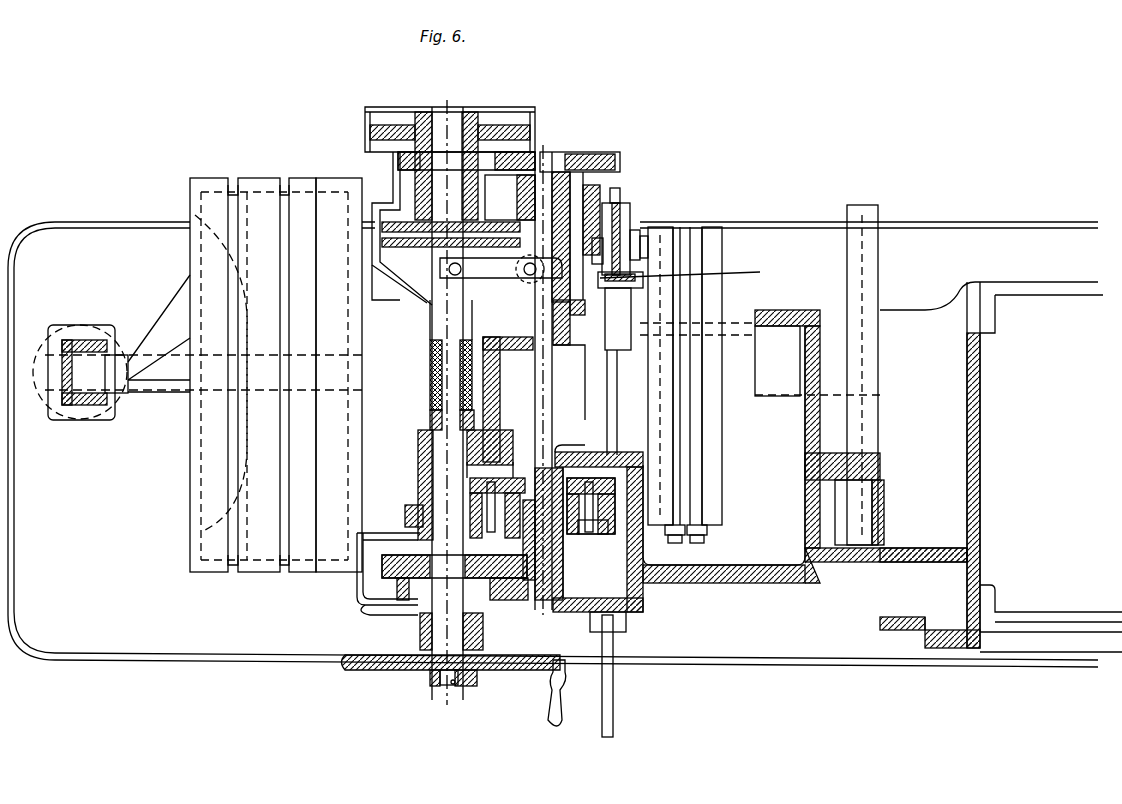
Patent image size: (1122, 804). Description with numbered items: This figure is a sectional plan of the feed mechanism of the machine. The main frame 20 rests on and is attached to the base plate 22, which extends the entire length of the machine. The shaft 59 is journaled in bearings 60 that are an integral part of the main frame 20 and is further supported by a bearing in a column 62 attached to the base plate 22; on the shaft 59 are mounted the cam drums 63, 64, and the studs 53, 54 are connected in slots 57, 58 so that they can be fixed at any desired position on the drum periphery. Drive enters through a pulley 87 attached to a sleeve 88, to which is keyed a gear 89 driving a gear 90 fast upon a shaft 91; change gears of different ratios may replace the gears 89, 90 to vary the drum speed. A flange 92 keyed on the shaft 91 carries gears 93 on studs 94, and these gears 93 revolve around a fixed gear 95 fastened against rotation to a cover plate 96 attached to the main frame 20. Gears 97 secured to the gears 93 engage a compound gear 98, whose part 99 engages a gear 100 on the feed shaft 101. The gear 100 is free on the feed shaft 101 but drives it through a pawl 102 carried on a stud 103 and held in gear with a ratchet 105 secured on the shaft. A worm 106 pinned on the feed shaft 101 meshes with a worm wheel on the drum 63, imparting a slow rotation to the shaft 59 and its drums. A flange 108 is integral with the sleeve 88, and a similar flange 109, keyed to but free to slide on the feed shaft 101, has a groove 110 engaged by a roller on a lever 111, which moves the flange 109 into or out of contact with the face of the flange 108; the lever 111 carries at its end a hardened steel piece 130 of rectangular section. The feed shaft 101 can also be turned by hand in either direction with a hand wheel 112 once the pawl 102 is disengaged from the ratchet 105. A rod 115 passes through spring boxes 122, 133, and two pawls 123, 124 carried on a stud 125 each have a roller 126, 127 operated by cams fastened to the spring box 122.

The main frame 20 is at (752, 578).
The base plate 22 is at (553, 444).
The stud 53 is at (673, 537).
The stud 54 is at (700, 538).
The slot 57 is at (678, 420).
The slot 58 is at (698, 440).
The shaft 59 is at (175, 385).
The bearing 60 is at (428, 345).
The column 62 is at (88, 340).
The drum 63 is at (276, 375).
The drum 64 is at (878, 275).
The pulley 87 is at (530, 160).
The sleeve 88 is at (480, 125).
The gear 89 is at (500, 155).
The gear 90 is at (600, 165).
The shaft 91 is at (560, 158).
The flange 92 is at (568, 450).
The gear 93 is at (440, 512).
The stud 94 is at (470, 497).
The fixed gear 95 is at (575, 540).
The cover plate 96 is at (626, 620).
The gear 97 is at (615, 475).
The compound gear 98 is at (527, 450).
The part of compound gear 99 is at (580, 545).
The gear 100 is at (495, 568).
The feed shaft 101 is at (445, 683).
The pawl 102 is at (357, 570).
The stud 103 is at (360, 598).
The ratchet 105 is at (418, 545).
The worm 106 is at (430, 378).
The flange 108 is at (495, 235).
The flange 109 is at (420, 245).
The groove 110 is at (420, 270).
The lever 111 is at (501, 269).
The hand wheel 112 is at (548, 672).
The rod 115 is at (620, 190).
The spring box 122 is at (625, 208).
The pawl 123 is at (632, 232).
The pawl 124 is at (605, 285).
The stud 125 is at (585, 215).
The roller 126 is at (643, 240).
The roller 127 is at (592, 245).
The hardened steel piece 130 is at (688, 268).
The spring box 133 is at (612, 712).